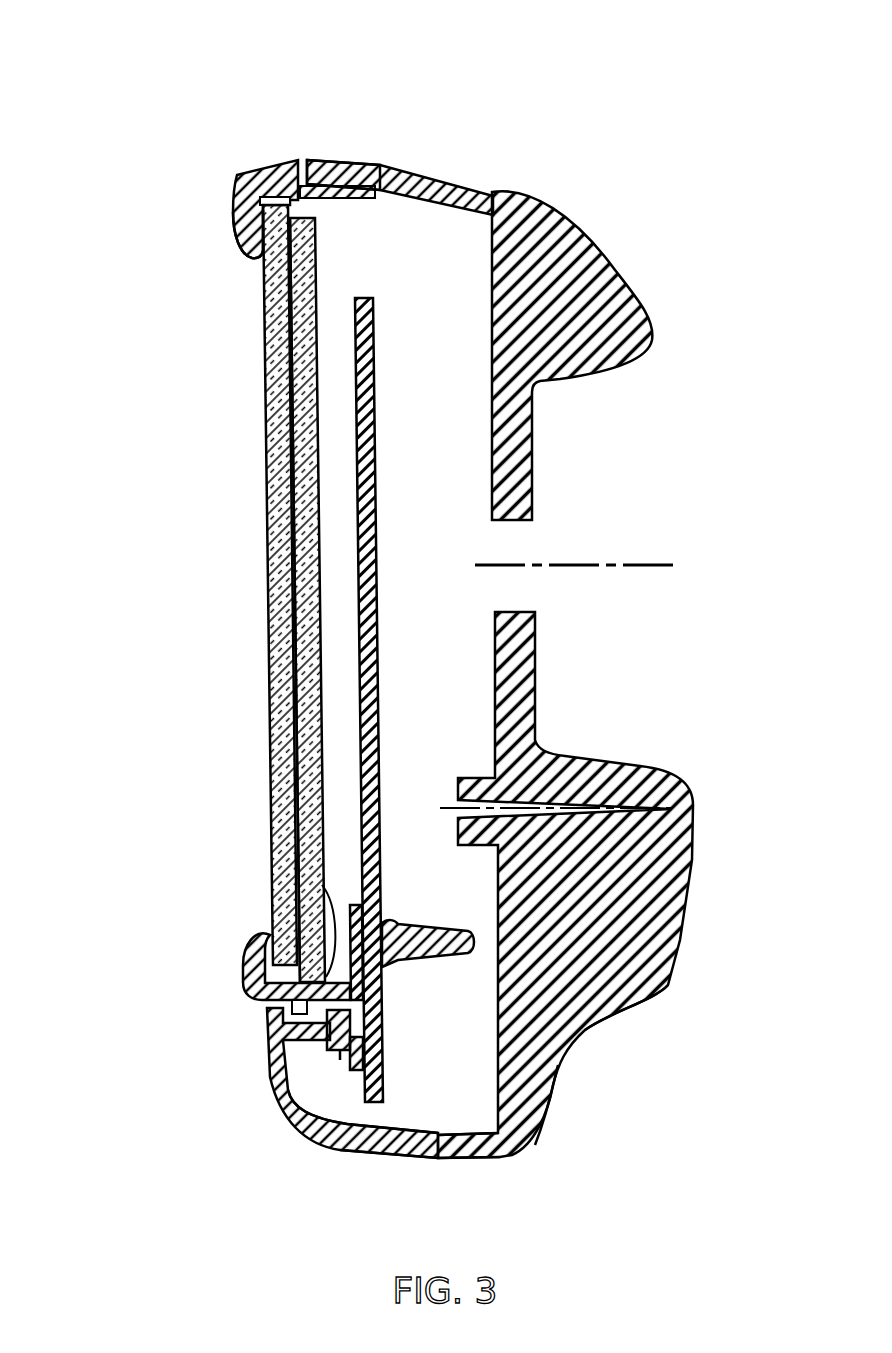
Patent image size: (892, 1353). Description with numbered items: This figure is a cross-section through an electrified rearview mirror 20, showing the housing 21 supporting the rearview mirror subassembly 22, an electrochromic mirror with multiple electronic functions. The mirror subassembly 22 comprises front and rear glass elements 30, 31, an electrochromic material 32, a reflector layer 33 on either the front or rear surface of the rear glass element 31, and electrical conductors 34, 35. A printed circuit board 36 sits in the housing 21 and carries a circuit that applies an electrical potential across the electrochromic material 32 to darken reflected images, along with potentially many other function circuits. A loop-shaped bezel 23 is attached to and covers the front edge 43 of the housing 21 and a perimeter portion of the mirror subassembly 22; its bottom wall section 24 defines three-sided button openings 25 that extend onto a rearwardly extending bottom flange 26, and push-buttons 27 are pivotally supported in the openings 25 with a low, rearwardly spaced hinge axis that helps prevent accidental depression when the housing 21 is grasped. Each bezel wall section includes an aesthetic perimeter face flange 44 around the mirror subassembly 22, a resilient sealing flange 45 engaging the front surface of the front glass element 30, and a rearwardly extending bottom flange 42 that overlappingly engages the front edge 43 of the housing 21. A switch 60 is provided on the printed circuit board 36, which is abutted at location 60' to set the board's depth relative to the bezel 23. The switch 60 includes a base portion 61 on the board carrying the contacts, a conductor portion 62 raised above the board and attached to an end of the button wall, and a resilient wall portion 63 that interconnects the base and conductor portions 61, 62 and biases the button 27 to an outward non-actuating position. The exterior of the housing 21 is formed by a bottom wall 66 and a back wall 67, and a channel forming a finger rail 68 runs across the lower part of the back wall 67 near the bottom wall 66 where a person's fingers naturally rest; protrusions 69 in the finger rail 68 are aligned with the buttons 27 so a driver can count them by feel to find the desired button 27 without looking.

The electrified rearview mirror 20 is at (556, 76).
The housing 21 is at (670, 740).
The rearview mirror subassembly 22 is at (262, 694).
The bezel 23 is at (232, 206).
The bottom wall section 24 is at (250, 962).
The button openings 25 is at (268, 1000).
The bottom flange 26 is at (390, 1158).
The push-buttons 27 is at (280, 1072).
The front glass element 30 is at (280, 437).
The rear glass element 31 is at (298, 372).
The electrochromic material 32 is at (288, 502).
The reflector layer 33 is at (298, 582).
The electrical conductor 34 is at (290, 208).
The electrical conductor 35 is at (325, 955).
The printed circuit board 36 is at (368, 462).
The bottom flange 42 is at (300, 162).
The front edge 43 is at (355, 162).
The perimeter face flange 44 is at (237, 178).
The resilient sealing flange 45 is at (256, 253).
The switch 60 is at (294, 1117).
The abutment location 60' is at (428, 959).
The base portion 61 is at (362, 1045).
The conductor portion 62 is at (348, 1020).
The resilient wall portion 63 is at (340, 1060).
The bottom wall 66 is at (478, 1158).
The back wall 67 is at (690, 880).
The finger rail 68 is at (600, 1015).
The protrusions 69 is at (553, 1090).